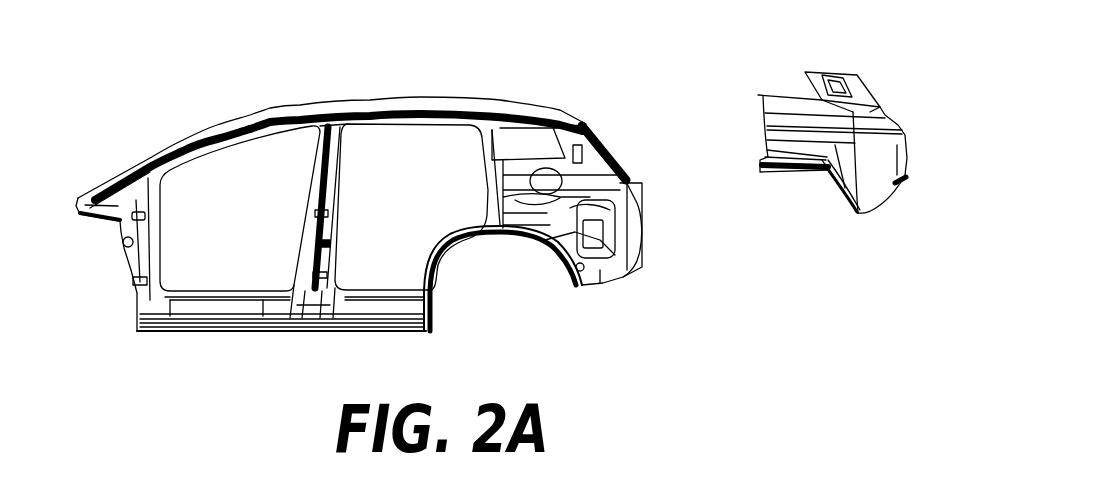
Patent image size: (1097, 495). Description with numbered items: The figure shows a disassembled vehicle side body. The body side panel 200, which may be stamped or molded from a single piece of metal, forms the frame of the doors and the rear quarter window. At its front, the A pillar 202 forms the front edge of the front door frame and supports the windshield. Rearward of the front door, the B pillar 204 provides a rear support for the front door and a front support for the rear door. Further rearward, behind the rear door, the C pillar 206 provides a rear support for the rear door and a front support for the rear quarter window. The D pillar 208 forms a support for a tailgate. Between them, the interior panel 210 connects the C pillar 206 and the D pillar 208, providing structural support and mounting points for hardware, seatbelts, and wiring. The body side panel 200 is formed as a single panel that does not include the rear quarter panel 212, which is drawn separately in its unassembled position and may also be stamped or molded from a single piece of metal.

The body side panel 200 is at (438, 255).
The A pillar 202 is at (148, 163).
The B pillar 204 is at (337, 180).
The C pillar 206 is at (488, 121).
The D pillar 208 is at (563, 120).
The interior panel 210 is at (560, 196).
The rear quarter panel 212 is at (862, 85).